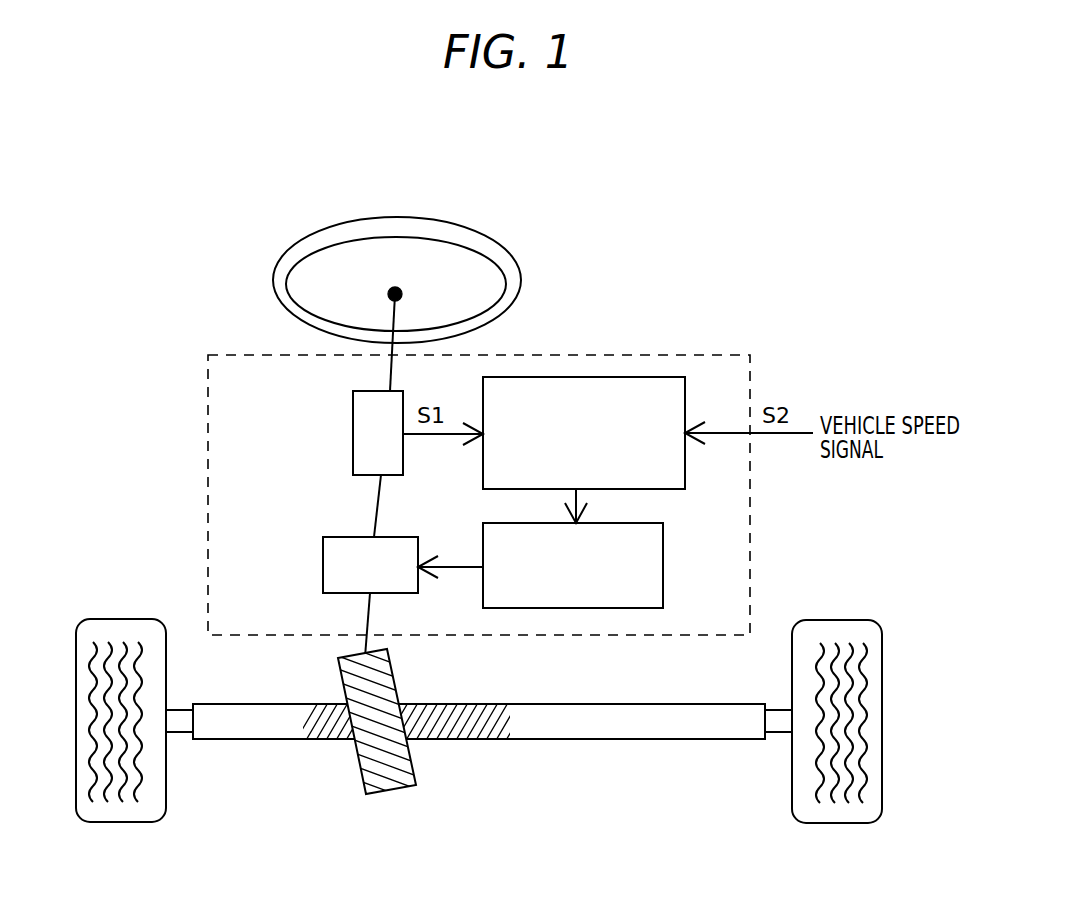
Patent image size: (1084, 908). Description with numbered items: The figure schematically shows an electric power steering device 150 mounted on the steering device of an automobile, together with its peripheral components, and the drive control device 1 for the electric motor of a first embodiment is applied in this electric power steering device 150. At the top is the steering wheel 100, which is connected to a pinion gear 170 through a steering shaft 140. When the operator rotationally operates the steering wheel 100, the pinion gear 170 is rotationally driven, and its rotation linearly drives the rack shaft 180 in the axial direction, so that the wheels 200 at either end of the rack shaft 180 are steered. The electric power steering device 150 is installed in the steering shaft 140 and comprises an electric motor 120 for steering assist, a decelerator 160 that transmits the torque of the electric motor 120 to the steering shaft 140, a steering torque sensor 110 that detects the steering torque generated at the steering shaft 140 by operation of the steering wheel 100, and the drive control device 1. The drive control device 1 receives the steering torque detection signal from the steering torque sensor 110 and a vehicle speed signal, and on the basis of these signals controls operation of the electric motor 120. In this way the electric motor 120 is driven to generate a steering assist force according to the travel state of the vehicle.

The drive control device 1 is at (578, 377).
The steering wheel 100 is at (427, 217).
The steering torque sensor 110 is at (353, 432).
The electric motor 120 is at (663, 558).
The steering shaft 140 is at (373, 507).
The electric power steering device 150 is at (672, 357).
The decelerator 160 is at (323, 566).
The pinion gear 170 is at (390, 794).
The rack shaft 180 is at (615, 739).
The wheels 200 is at (865, 620).